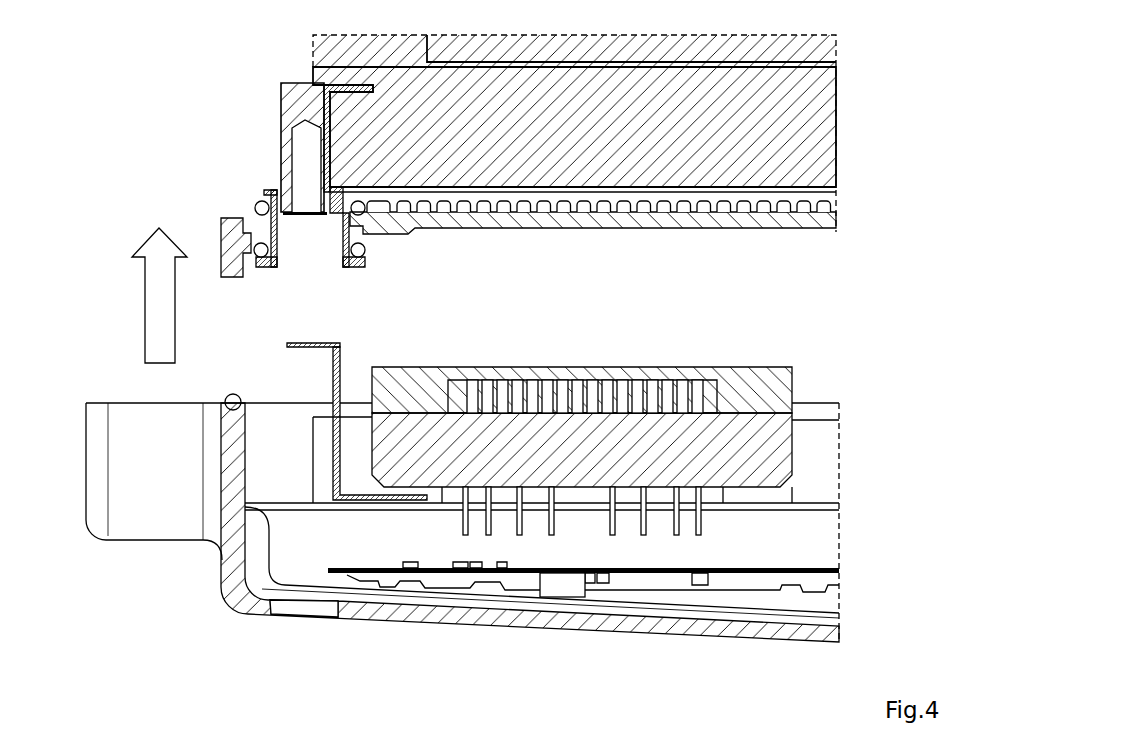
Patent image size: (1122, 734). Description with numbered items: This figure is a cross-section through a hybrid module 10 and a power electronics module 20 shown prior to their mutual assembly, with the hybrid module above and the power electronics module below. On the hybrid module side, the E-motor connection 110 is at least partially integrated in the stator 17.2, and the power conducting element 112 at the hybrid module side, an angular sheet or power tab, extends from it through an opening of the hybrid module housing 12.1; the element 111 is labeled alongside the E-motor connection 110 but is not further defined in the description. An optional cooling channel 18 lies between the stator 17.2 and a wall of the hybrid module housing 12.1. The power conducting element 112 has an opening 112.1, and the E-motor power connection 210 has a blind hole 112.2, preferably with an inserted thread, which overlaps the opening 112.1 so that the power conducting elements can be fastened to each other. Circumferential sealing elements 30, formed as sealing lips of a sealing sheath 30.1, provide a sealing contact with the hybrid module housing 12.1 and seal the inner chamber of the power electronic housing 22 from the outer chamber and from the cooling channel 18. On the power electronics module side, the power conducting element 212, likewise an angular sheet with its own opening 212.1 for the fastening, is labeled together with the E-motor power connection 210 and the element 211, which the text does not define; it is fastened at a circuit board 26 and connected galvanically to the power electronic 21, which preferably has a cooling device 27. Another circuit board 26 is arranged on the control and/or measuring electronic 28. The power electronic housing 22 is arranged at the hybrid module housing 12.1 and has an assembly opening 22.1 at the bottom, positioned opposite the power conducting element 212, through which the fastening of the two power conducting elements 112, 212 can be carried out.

The hybrid module 10 is at (132, 151).
The hybrid module housing 12.1 is at (218, 218).
The stator 17.2 is at (280, 98).
The power conducting element at the hybrid module side 112 is at (323, 107).
The blind hole 112.2 is at (292, 153).
The opening 112.1 is at (305, 213).
The sealing sheath 30.1 is at (366, 268).
The sealing elements 30 is at (258, 245).
The E-motor connection 110 is at (208, 295).
The upper connector housing 111 is at (266, 293).
The cooling channel 18 is at (523, 207).
The power electronics module 20 is at (168, 606).
The power electronic housing 22 is at (222, 567).
The assembly opening 22.1 is at (317, 613).
The power conducting element at the power electronics module side 212 is at (414, 402).
The bracket body 211 is at (414, 402).
The E-motor power connection 210 is at (342, 350).
The opening 212.1 is at (305, 343).
The power electronic 21 is at (582, 398).
The cooling device 27 is at (630, 358).
The circuit board 26 is at (813, 503).
The control and/or measuring electronic 28 is at (605, 598).